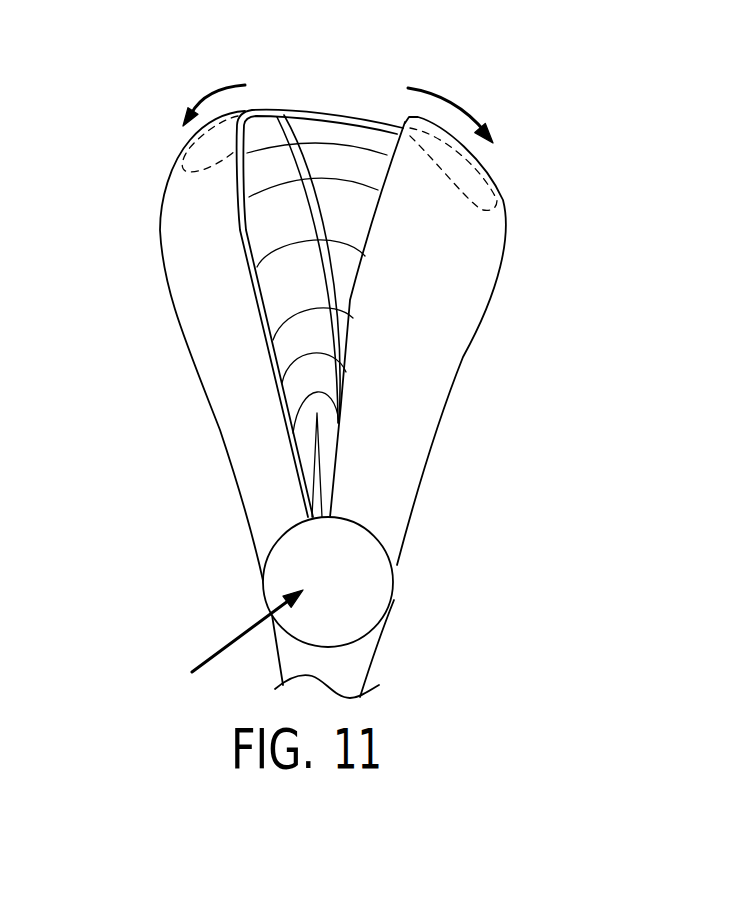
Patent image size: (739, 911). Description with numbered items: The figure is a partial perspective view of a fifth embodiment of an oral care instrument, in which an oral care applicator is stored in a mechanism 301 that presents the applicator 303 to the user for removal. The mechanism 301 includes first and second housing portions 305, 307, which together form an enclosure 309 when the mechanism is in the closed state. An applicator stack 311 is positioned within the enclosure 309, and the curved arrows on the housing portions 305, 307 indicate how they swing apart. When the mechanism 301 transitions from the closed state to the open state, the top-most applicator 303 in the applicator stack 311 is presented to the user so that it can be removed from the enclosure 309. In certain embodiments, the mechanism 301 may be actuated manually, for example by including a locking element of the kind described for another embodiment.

The mechanism 301 is at (440, 429).
The applicator 303 is at (276, 117).
The first housing portion 305 is at (487, 268).
The second housing portion 307 is at (197, 253).
The enclosure 309 is at (300, 289).
The applicator stack 311 is at (346, 148).